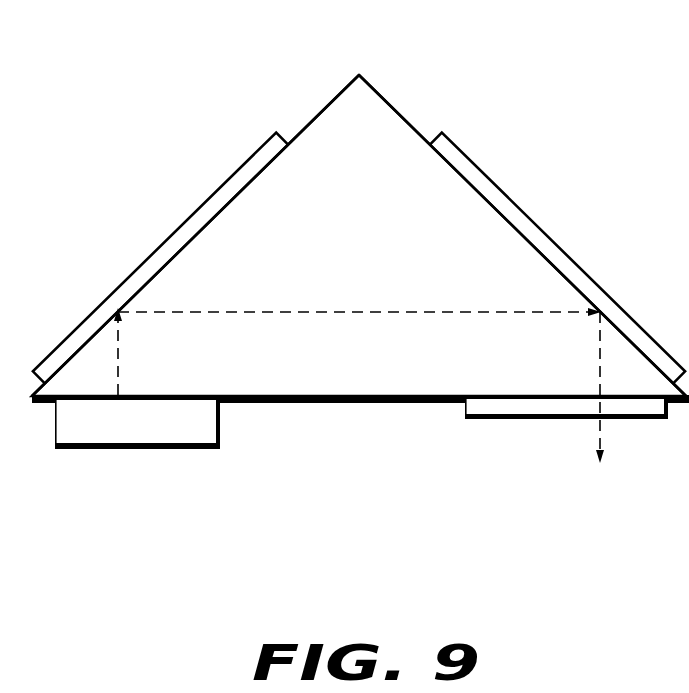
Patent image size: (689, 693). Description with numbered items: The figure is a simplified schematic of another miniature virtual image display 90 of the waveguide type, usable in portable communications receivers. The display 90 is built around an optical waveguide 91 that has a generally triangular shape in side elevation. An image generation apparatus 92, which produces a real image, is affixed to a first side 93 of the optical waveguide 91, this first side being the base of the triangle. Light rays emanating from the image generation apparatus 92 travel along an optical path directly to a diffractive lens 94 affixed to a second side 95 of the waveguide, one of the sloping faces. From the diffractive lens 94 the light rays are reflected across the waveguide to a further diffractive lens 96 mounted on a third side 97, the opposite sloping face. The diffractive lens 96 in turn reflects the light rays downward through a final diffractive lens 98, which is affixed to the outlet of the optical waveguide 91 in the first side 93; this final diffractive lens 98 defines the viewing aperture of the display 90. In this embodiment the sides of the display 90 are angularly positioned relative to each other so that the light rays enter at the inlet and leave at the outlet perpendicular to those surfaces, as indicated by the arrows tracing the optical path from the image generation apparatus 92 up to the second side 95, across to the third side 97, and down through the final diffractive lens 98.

The miniature virtual image display 90 is at (376, 516).
The optical waveguide 91 is at (363, 120).
The image generation apparatus 92 is at (173, 451).
The first side 93 is at (335, 403).
The diffractive lens 94 is at (84, 320).
The second side 95 is at (317, 117).
The diffractive lens 96 is at (567, 257).
The third side 97 is at (420, 132).
The final diffractive lens 98 is at (537, 420).